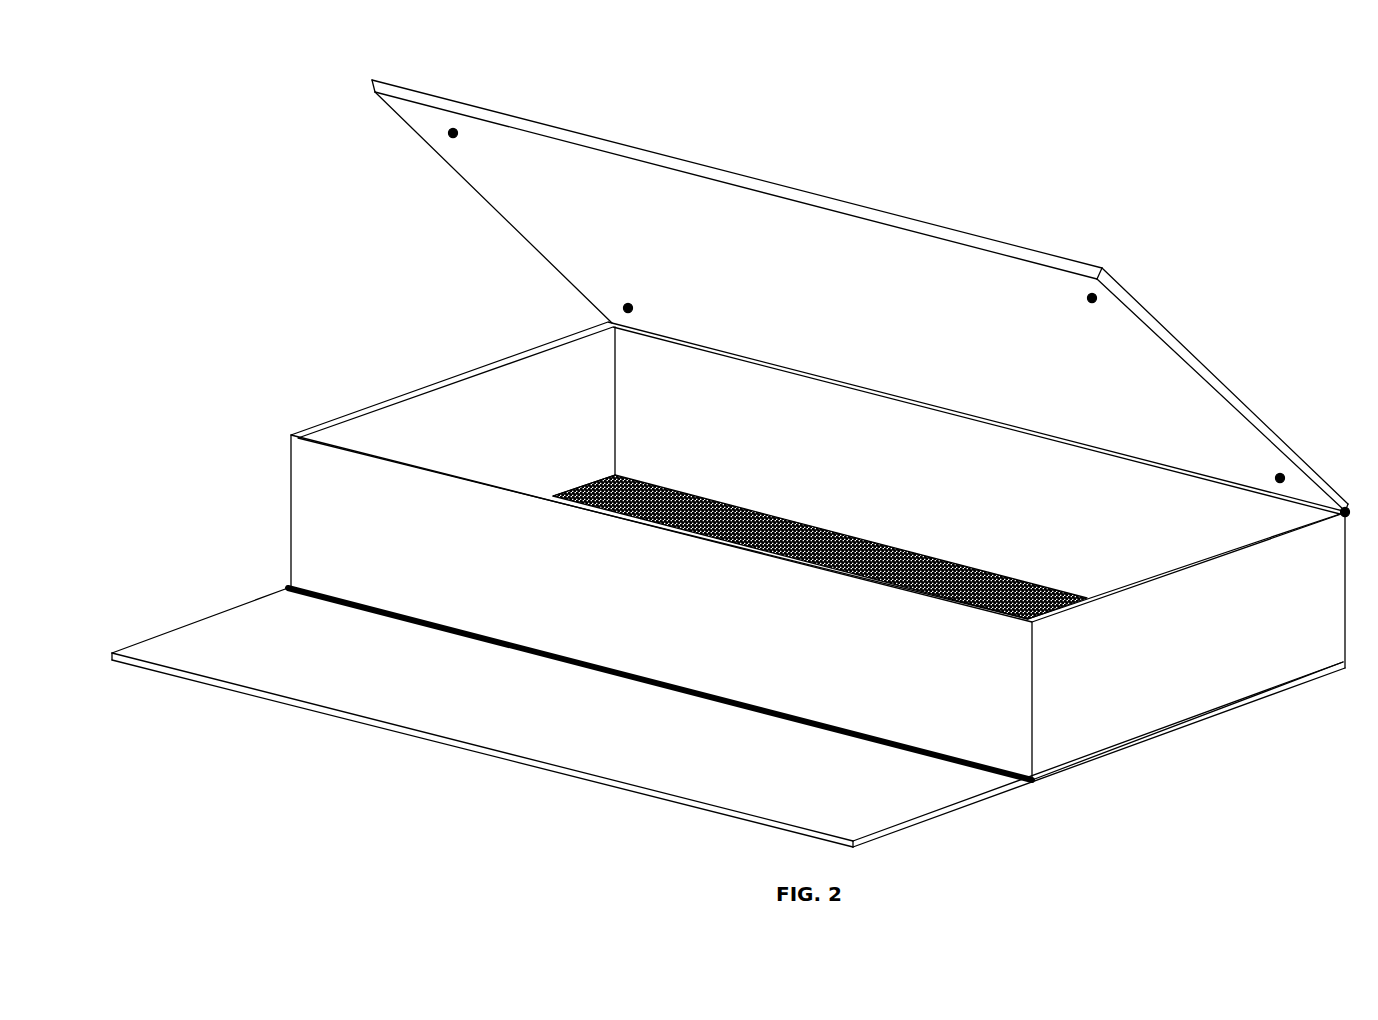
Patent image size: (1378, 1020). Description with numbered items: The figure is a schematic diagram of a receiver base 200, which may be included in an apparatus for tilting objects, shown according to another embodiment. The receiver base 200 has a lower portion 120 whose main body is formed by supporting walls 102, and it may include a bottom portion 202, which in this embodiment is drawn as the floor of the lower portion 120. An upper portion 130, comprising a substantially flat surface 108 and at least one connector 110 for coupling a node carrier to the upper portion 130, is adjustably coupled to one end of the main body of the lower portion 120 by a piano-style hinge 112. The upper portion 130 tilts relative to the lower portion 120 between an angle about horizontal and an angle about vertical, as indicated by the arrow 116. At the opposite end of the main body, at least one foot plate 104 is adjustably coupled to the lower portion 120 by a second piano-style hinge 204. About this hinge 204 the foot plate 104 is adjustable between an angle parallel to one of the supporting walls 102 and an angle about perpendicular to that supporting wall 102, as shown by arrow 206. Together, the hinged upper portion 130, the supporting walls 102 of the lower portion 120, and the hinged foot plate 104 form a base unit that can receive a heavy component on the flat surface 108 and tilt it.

The receiver base 200 is at (1052, 146).
The upper portion 130 is at (462, 224).
The substantially flat surface 108 is at (833, 324).
The connector 110 is at (453, 133).
The arrow 116 is at (1263, 520).
The lower portion 120 is at (276, 503).
The supporting walls 102 is at (511, 453).
The bottom portion 202 is at (968, 588).
The piano-style hinge 112 is at (1345, 516).
The piano-style hinge 204 is at (283, 590).
The foot plate 104 is at (523, 732).
The arrow 206 is at (990, 664).